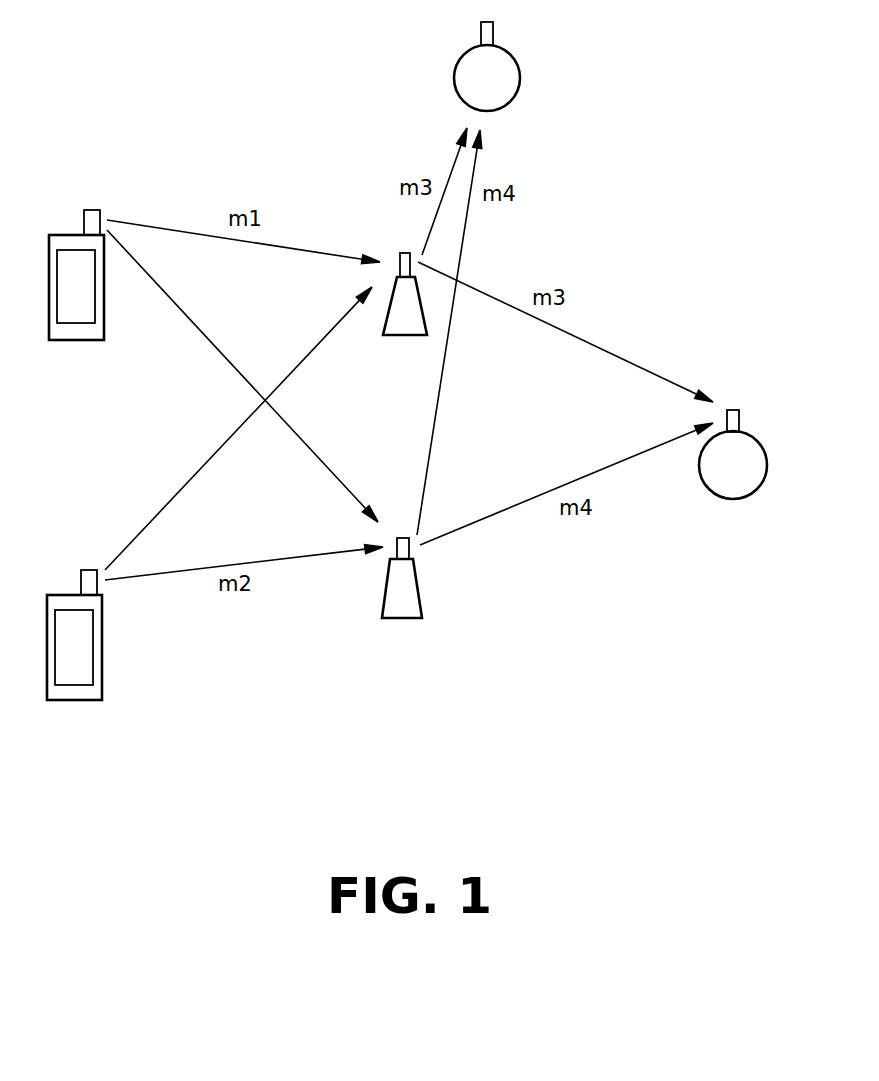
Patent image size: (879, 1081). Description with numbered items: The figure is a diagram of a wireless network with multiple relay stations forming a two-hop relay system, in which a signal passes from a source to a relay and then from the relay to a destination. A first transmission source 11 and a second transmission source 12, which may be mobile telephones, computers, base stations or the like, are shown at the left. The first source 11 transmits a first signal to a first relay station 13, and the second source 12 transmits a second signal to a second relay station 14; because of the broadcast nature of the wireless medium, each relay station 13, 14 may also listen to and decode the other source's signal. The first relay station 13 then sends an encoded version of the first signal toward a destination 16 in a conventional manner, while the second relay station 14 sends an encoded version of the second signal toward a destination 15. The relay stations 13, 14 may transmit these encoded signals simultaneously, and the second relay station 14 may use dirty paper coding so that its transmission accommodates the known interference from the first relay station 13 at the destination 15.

The first transmission source 11 is at (104, 325).
The second transmission source 12 is at (108, 693).
The first relay station 13 is at (383, 335).
The second relay station 14 is at (427, 607).
The destination 15 is at (767, 478).
The destination 16 is at (519, 87).